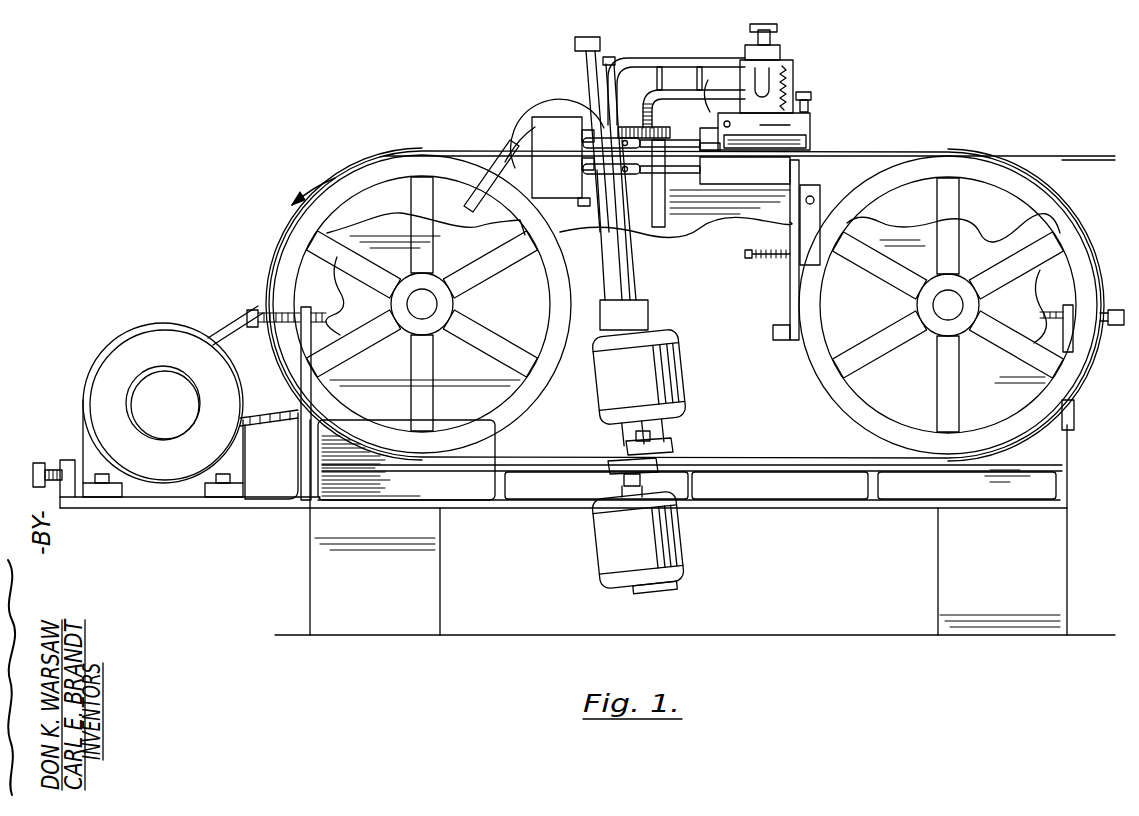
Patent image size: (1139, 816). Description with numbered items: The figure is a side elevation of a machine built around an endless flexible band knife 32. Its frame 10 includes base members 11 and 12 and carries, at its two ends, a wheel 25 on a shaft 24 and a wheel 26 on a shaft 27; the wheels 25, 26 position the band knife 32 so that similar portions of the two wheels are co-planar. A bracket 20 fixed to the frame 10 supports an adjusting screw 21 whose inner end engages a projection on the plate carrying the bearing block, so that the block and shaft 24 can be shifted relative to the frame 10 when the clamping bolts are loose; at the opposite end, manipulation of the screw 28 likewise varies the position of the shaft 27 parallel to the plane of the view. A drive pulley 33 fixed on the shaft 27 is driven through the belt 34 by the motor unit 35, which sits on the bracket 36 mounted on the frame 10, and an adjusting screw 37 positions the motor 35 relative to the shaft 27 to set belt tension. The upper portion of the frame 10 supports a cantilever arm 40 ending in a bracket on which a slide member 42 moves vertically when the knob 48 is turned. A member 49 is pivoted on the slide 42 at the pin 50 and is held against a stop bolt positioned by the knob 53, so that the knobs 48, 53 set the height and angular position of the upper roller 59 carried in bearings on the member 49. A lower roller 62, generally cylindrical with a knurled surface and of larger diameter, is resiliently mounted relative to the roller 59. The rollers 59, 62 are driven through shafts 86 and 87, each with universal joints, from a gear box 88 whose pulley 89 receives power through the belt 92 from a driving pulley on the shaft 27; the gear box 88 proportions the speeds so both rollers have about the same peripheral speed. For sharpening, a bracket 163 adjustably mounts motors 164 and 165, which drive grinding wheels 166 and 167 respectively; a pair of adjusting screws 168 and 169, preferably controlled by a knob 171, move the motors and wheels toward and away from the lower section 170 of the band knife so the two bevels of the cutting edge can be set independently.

The frame 10 is at (815, 508).
The base member 11 is at (985, 571).
The base member 12 is at (390, 571).
The bracket 20 is at (1075, 412).
The adjusting screw 21 is at (1104, 326).
The shaft 24 is at (935, 305).
The wheel 25 is at (1048, 182).
The wheel 26 is at (284, 262).
The shaft 27 is at (430, 300).
The screw 28 is at (256, 330).
The endless flexible band knife 32 is at (490, 152).
The drive pulley 33 is at (328, 287).
The belt 34 is at (226, 323).
The motor unit 35 is at (150, 326).
The bracket 36 is at (165, 508).
The adjusting screw 37 is at (52, 462).
The cantilever arm 40 is at (628, 60).
The slide member 42 is at (798, 78).
The knob 48 is at (772, 30).
The member 49 is at (730, 118).
The pin 50 is at (724, 124).
The knob 53 is at (810, 97).
The roller 59 is at (792, 145).
The lower roller 62 is at (718, 188).
The shaft 86 is at (670, 125).
The shaft 87 is at (656, 198).
The gear box 88 is at (540, 110).
The pulley 89 is at (555, 118).
The belt 92 is at (520, 140).
The bracket 163 is at (650, 318).
The motor 164 is at (680, 378).
The motor 165 is at (680, 548).
The grinding wheel 166 is at (672, 447).
The grinding wheel 167 is at (612, 468).
The adjusting screw 168 is at (626, 256).
The adjusting screw 169 is at (608, 270).
The lower section of the band knife 170 is at (772, 464).
The knob 171 is at (575, 44).